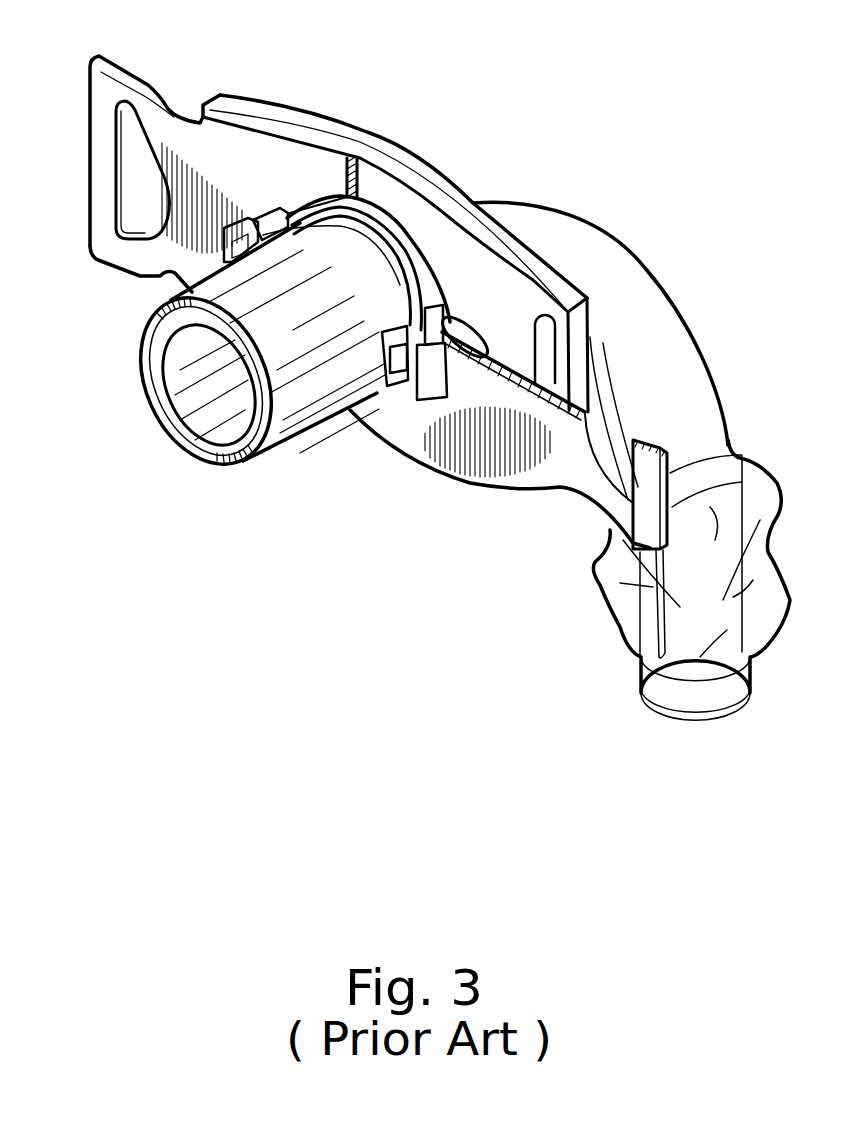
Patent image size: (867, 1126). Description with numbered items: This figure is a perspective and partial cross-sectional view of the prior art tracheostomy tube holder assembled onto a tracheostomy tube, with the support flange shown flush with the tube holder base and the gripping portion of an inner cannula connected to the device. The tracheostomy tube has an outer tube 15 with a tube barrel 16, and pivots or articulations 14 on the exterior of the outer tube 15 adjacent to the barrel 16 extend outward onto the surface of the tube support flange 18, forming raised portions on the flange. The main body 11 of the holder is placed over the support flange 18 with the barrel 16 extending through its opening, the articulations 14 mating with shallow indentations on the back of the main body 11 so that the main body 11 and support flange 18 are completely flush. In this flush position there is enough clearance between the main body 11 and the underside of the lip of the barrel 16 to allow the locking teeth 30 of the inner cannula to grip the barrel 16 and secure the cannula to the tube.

The main body 11 is at (257, 163).
The pivots or articulations 14 is at (485, 285).
The outer tube 15 is at (633, 325).
The tube barrel 16 is at (362, 248).
The tube support flange 18 is at (470, 337).
The locking teeth 30 is at (224, 240).